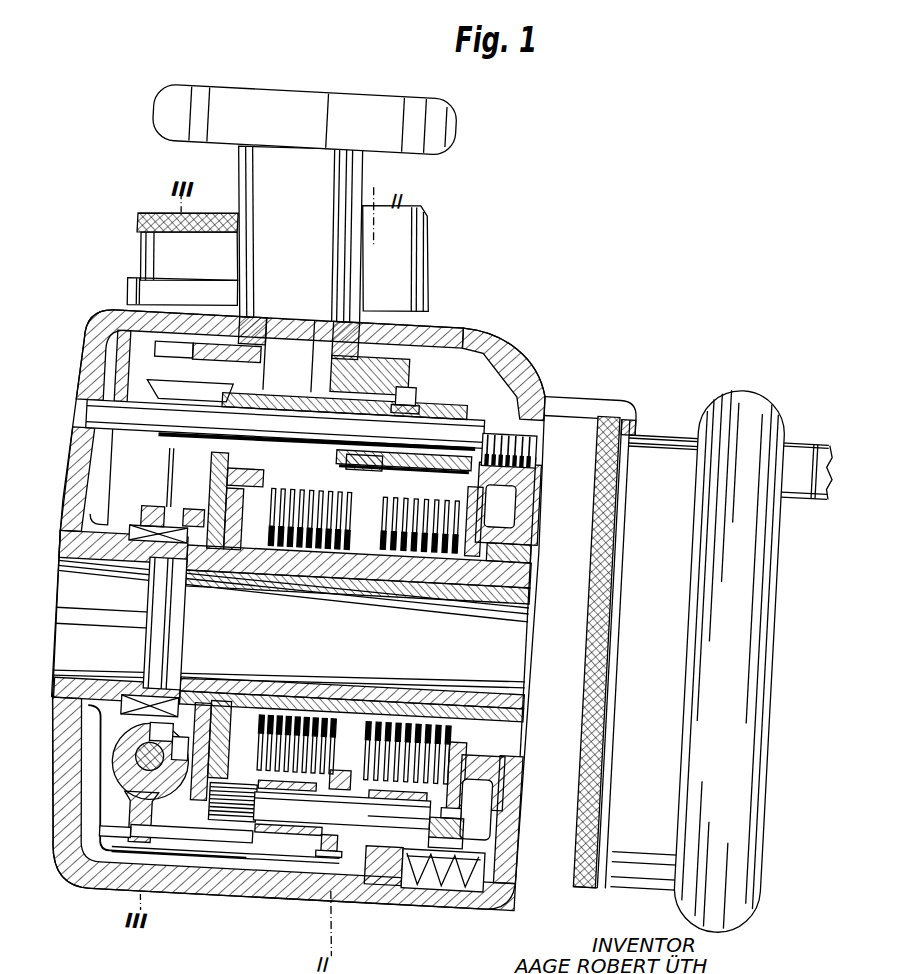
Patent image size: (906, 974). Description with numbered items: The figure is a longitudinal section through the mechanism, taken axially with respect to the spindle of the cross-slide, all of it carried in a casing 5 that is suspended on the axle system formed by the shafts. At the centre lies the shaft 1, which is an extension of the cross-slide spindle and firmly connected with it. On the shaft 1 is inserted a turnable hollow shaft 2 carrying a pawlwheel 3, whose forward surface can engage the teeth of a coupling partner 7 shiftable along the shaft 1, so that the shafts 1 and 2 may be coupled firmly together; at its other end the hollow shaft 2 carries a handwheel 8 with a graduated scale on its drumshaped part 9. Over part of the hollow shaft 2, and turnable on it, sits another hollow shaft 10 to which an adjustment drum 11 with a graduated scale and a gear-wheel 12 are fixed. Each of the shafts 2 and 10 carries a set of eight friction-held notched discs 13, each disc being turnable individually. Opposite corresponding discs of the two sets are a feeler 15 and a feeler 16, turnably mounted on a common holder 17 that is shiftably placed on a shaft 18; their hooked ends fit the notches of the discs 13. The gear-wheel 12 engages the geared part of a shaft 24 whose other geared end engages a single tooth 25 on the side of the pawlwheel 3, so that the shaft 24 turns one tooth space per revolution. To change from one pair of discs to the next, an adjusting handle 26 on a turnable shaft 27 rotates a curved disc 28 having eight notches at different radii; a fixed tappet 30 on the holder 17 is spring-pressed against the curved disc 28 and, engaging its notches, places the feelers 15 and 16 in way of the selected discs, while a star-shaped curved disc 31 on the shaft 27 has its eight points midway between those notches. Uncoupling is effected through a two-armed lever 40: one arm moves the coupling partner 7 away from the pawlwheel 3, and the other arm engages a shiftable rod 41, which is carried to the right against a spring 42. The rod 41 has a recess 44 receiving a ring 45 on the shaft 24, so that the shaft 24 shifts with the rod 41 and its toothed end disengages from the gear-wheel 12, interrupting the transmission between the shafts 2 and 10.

The shaft 1 is at (332, 586).
The hollow shaft 2 is at (290, 578).
The pawlwheel 3 is at (204, 474).
The casing 5 is at (70, 812).
The coupling partner 7 is at (150, 512).
The handwheel 8 is at (766, 402).
The drumshaped part 9 is at (655, 428).
The hollow shaft 10 is at (522, 563).
The adjustment drum 11 is at (572, 404).
The gear-wheel 12 is at (470, 510).
The notched discs 13 is at (290, 504).
The feeler 15 is at (330, 478).
The feeler 16 is at (462, 490).
The holder 17 is at (380, 470).
The shaft 18 is at (90, 424).
The shaft 24 is at (400, 846).
The single tooth 25 is at (280, 470).
The adjusting handle 26 is at (165, 104).
The turnable shaft 27 is at (272, 320).
The curved disc 28 is at (300, 398).
The tappet 30 is at (408, 394).
The star-shaped curved disc 31 is at (205, 360).
The two-armed lever 40 is at (142, 798).
The shiftable rod 41 is at (188, 834).
The spring 42 is at (455, 880).
The recess 44 is at (340, 856).
The ring 45 is at (346, 768).